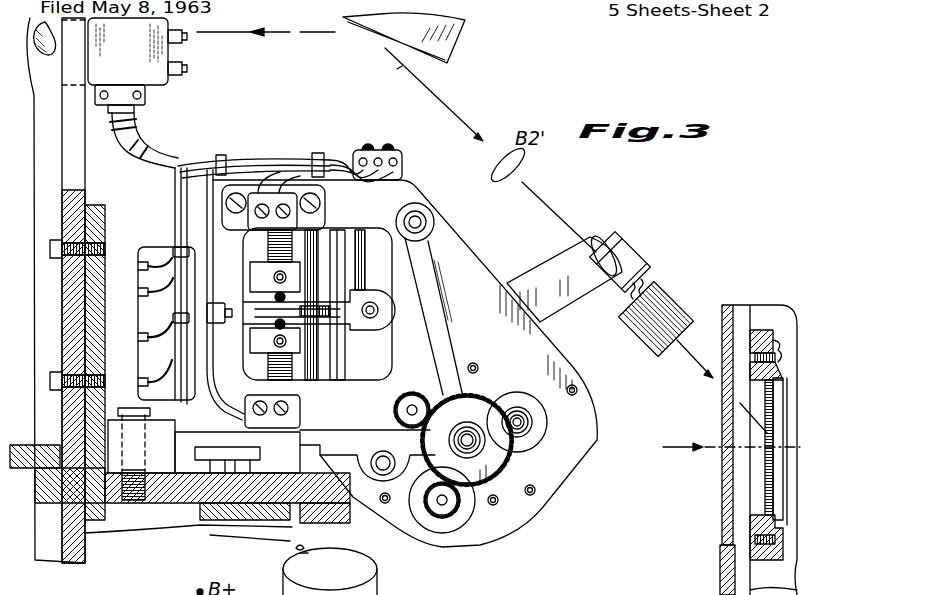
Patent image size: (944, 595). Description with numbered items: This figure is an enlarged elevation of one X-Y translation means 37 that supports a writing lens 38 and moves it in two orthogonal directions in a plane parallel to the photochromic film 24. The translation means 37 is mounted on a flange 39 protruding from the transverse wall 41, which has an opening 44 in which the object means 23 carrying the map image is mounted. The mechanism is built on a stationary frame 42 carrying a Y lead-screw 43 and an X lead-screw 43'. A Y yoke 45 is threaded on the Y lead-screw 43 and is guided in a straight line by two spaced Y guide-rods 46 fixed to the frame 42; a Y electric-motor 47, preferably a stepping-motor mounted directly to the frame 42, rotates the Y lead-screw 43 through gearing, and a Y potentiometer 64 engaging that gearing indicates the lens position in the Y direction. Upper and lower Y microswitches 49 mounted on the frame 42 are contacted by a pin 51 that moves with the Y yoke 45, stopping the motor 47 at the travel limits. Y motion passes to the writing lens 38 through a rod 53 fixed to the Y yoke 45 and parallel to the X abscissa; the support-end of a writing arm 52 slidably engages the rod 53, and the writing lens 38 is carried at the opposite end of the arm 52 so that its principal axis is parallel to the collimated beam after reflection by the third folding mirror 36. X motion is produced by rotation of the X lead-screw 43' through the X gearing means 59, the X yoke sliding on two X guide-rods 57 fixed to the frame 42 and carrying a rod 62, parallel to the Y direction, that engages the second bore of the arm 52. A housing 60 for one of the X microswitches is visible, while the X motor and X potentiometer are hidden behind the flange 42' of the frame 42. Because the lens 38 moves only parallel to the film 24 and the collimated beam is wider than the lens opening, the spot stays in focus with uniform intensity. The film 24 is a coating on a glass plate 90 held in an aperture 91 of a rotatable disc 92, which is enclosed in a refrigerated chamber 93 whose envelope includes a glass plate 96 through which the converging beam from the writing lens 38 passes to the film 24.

The object means 23 is at (26, 445).
The photochromic film 24 is at (766, 478).
The third folding mirror 36 is at (432, 60).
The X-Y translation means 37 is at (260, 143).
The writing lens 38 is at (672, 292).
The flange 39 is at (182, 492).
The transverse wall 41 is at (88, 206).
The stationary frame 42 is at (432, 495).
The flange of the frame 42' is at (423, 363).
The Y lead-screw 43 is at (257, 309).
The X lead-screw 43' is at (457, 421).
The opening 44 is at (70, 503).
The Y yoke 45 is at (258, 348).
The Y guide-rods 46 is at (360, 232).
The Y electric-motor 47 is at (158, 218).
The Y microswitches 49 is at (268, 243).
The pin 51 is at (276, 320).
The writing arm 52 is at (540, 285).
The rod 53 is at (380, 311).
The X guide-rods 57 is at (425, 220).
The X gearing means 59 is at (477, 392).
The housing for X microswitch 60 is at (398, 152).
The rod 62 is at (348, 252).
The Y potentiometer 64 is at (148, 304).
The glass plate 90 is at (764, 458).
The aperture 91 is at (752, 520).
The rotatable disc 92 is at (766, 330).
The refrigerated chamber 93 is at (740, 308).
The glass plate 96 is at (724, 418).